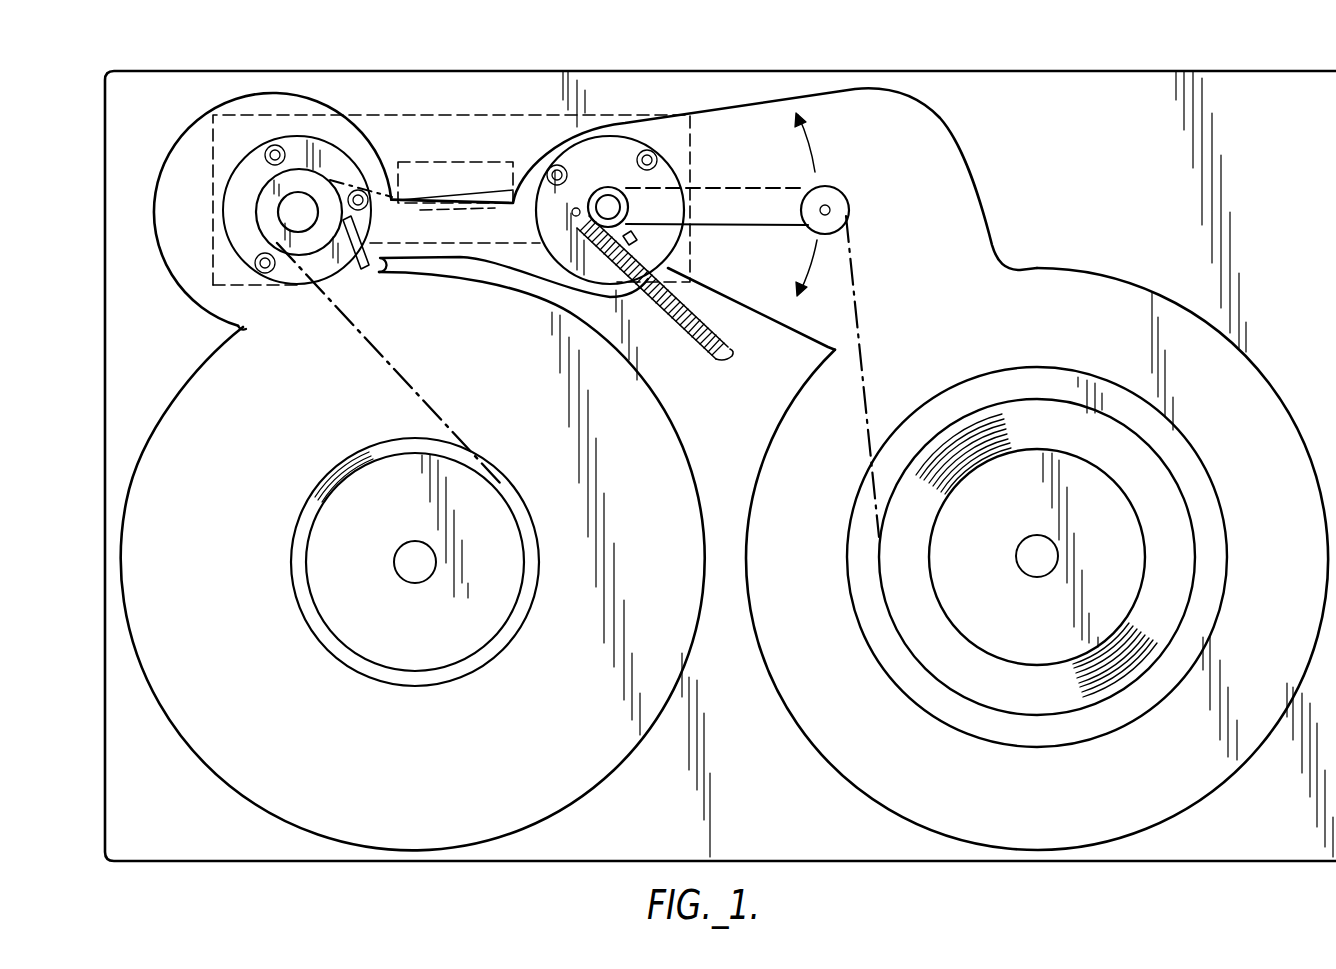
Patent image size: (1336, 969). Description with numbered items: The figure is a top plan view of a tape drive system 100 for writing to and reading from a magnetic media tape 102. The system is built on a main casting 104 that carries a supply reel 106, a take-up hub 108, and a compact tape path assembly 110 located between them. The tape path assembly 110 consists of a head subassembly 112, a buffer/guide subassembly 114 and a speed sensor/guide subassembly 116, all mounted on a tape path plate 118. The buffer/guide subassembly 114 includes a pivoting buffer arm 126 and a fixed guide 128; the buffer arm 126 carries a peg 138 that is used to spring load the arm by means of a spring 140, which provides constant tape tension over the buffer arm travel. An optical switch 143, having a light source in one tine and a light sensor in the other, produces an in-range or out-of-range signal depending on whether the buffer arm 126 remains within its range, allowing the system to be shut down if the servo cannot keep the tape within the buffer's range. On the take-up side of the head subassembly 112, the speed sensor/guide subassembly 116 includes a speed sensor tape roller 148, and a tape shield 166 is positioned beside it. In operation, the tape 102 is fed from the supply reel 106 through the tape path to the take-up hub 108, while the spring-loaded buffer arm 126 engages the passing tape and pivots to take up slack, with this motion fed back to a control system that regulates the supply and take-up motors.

The tape drive system 100 is at (263, 875).
The magnetic media tape 102 is at (380, 358).
The main casting 104 is at (1308, 125).
The supply reel 106 is at (1032, 514).
The take-up hub 108 is at (410, 516).
The compact tape path assembly 110 is at (301, 94).
The head subassembly 112 is at (431, 155).
The buffer/guide subassembly 114 is at (623, 123).
The speed sensor/guide subassembly 116 is at (244, 160).
The tape path plate 118 is at (211, 180).
The buffer arm 126 is at (733, 225).
The fixed guide 128 is at (652, 142).
The peg 138 is at (571, 214).
The spring 140 is at (690, 342).
The optical switch 143 is at (640, 239).
The speed sensor tape roller 148 is at (256, 226).
The tape shield 166 is at (357, 272).